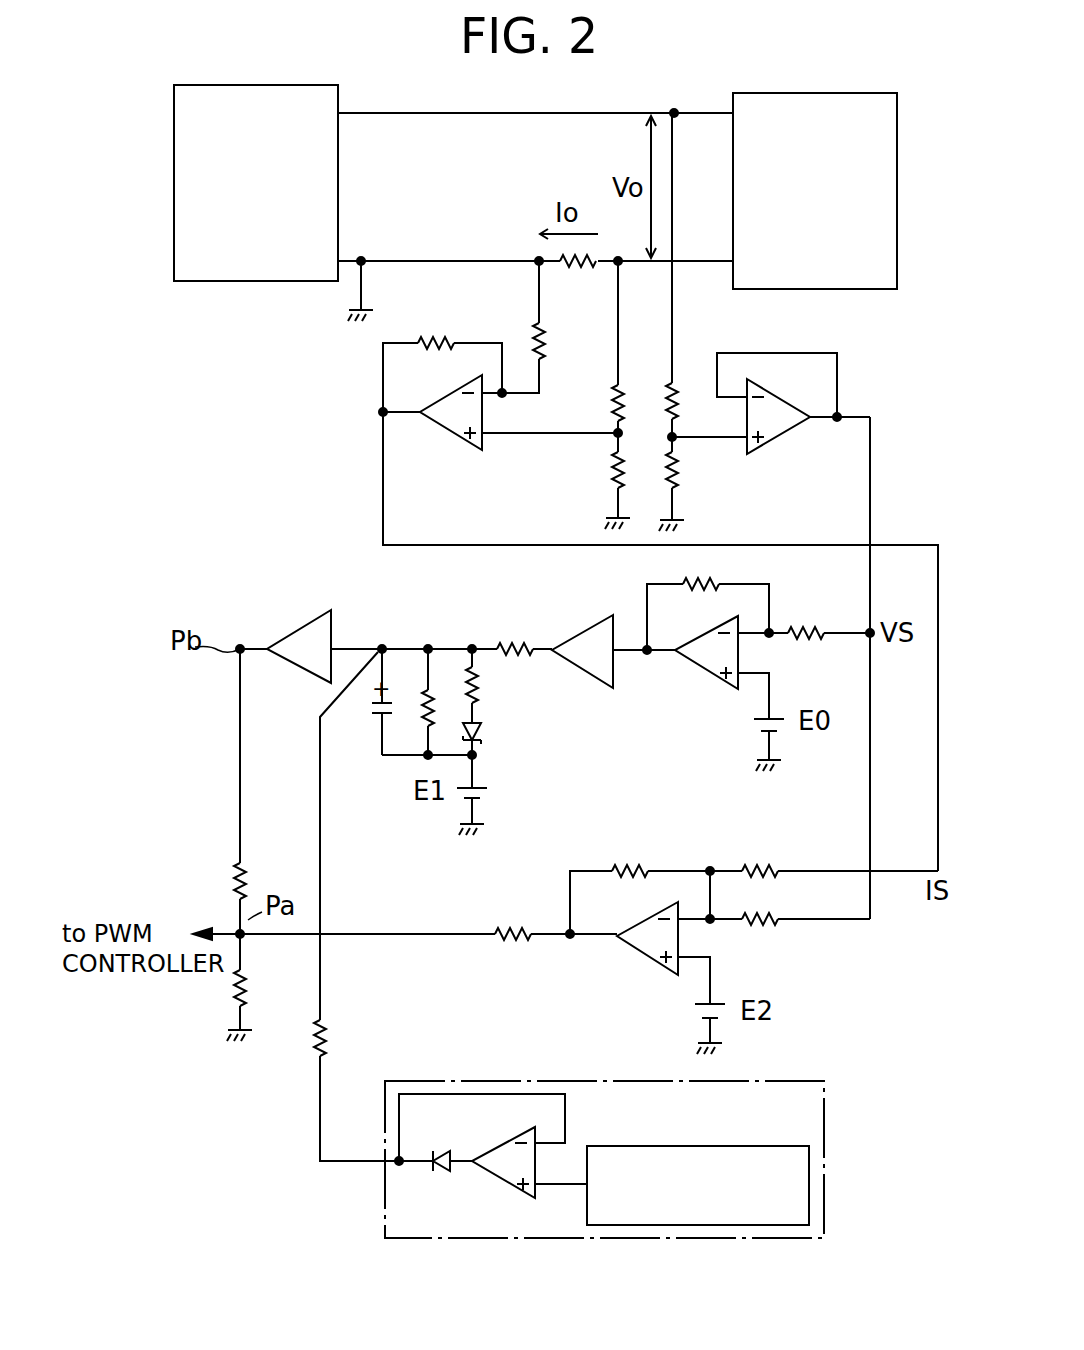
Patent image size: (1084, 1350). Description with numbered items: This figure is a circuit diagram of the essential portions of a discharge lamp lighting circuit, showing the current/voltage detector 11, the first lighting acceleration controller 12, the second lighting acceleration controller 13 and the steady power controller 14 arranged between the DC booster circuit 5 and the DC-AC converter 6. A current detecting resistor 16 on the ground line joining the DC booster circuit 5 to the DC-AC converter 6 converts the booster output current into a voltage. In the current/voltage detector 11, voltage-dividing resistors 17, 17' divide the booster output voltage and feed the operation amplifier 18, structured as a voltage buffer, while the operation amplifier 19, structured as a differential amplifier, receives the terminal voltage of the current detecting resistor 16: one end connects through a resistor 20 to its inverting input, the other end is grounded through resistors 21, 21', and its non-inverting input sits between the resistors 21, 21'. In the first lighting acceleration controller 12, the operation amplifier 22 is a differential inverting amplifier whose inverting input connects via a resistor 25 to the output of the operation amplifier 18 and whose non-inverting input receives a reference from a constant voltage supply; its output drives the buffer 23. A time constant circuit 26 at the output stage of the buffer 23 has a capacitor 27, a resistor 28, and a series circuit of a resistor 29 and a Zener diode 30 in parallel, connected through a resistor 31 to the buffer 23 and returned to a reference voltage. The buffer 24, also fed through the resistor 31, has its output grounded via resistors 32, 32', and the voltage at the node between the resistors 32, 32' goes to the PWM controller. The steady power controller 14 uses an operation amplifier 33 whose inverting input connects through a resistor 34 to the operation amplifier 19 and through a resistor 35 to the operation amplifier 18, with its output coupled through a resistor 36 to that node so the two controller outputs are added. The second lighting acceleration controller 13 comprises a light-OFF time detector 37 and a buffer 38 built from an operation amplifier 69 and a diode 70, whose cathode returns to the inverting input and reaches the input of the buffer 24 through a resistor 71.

The DC booster circuit 5 is at (280, 85).
The DC-AC converter 6 is at (815, 93).
The current/voltage detector 11 is at (330, 462).
The first lighting acceleration controller 12 is at (635, 732).
The second lighting acceleration controller 13 is at (785, 1081).
The steady power controller 14 is at (586, 975).
The current detecting resistor 16 is at (585, 262).
The voltage-dividing resistor 17 is at (700, 365).
The voltage-dividing resistor 17' is at (705, 481).
The operation amplifier 18 is at (785, 438).
The operation amplifier 19 is at (448, 440).
The resistor 20 is at (545, 342).
The resistor 21 is at (638, 383).
The resistor 21' is at (598, 481).
The operation amplifier 22 is at (712, 680).
The buffer 23 is at (590, 618).
The buffer 24 is at (300, 626).
The resistor 25 is at (806, 628).
The time constant circuit 26 is at (522, 718).
The capacitor 27 is at (374, 716).
The resistor 28 is at (420, 712).
The resistor 29 is at (480, 680).
The Zener diode 30 is at (480, 737).
The resistor 31 is at (527, 642).
The resistor 32 is at (214, 791).
The resistor 32' is at (210, 987).
The operation amplifier 33 is at (650, 962).
The resistor 34 is at (760, 866).
The resistor 35 is at (768, 927).
The resistor 36 is at (510, 946).
The light-OFF time detector 37 is at (809, 1186).
The buffer 38 is at (480, 1195).
The operation amplifier 69 is at (536, 1190).
The diode 70 is at (438, 1174).
The resistor 71 is at (314, 1044).